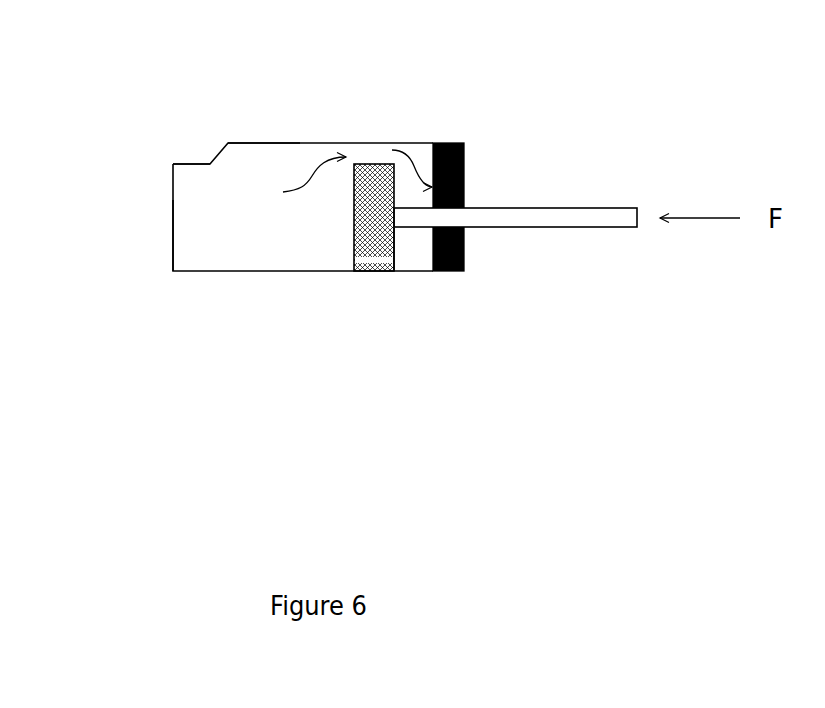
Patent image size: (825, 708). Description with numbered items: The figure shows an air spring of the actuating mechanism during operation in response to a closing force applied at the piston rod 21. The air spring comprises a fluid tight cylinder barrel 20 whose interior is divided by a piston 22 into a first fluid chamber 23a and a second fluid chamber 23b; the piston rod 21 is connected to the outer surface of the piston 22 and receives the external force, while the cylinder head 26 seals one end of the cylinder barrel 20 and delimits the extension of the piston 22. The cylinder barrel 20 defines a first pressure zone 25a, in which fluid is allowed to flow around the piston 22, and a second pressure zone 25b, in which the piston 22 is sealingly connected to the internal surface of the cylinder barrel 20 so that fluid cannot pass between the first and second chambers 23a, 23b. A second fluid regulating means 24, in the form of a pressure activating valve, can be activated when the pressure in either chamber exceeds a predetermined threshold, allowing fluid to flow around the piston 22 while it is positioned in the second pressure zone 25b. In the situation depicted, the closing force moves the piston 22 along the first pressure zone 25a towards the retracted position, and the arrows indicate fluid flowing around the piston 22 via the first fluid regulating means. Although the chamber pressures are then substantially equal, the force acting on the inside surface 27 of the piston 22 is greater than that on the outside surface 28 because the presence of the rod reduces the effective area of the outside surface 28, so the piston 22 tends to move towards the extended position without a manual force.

The cylinder barrel 20 is at (246, 273).
The piston rod 21 is at (536, 214).
The piston 22 is at (383, 170).
The first fluid chamber 23a is at (413, 262).
The second fluid chamber 23b is at (200, 241).
The second fluid regulating means 24 is at (362, 264).
The first pressure zone 25a is at (267, 141).
The second pressure zone 25b is at (198, 158).
The cylinder head 26 is at (465, 151).
The inside surface 27 is at (350, 198).
The outside surface 28 is at (403, 240).